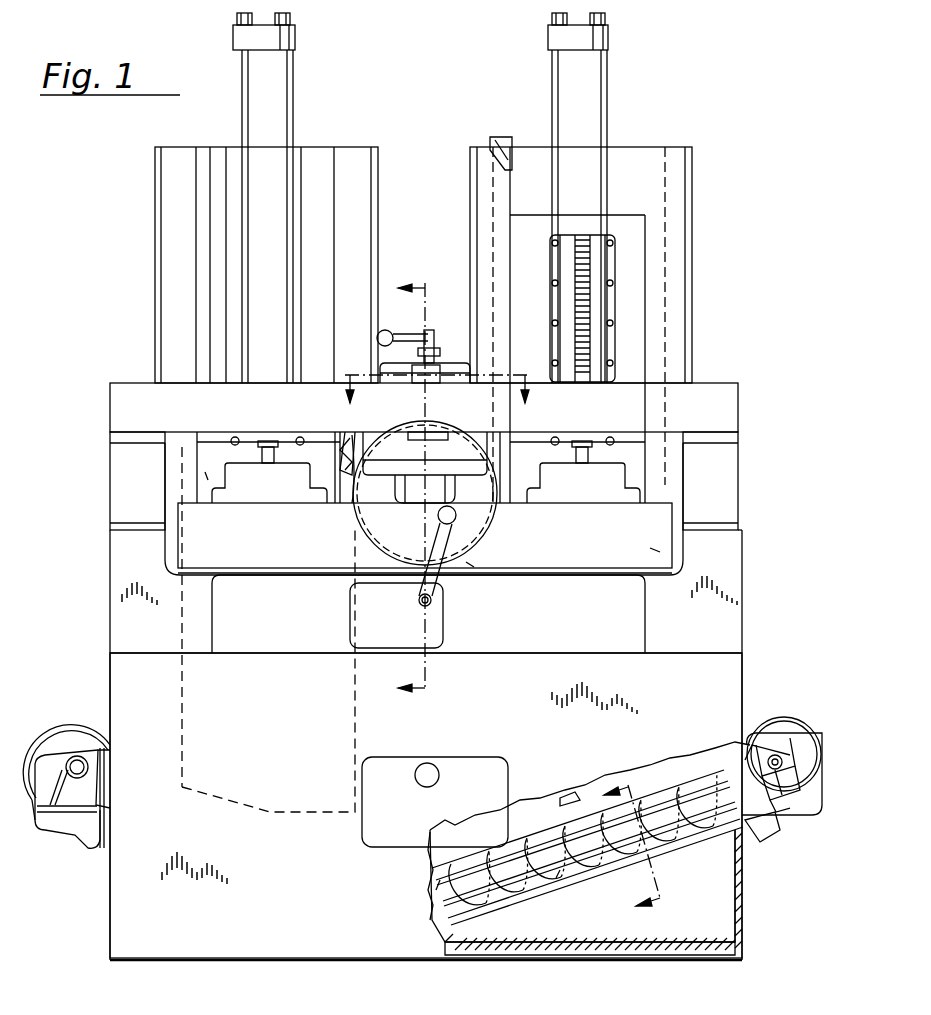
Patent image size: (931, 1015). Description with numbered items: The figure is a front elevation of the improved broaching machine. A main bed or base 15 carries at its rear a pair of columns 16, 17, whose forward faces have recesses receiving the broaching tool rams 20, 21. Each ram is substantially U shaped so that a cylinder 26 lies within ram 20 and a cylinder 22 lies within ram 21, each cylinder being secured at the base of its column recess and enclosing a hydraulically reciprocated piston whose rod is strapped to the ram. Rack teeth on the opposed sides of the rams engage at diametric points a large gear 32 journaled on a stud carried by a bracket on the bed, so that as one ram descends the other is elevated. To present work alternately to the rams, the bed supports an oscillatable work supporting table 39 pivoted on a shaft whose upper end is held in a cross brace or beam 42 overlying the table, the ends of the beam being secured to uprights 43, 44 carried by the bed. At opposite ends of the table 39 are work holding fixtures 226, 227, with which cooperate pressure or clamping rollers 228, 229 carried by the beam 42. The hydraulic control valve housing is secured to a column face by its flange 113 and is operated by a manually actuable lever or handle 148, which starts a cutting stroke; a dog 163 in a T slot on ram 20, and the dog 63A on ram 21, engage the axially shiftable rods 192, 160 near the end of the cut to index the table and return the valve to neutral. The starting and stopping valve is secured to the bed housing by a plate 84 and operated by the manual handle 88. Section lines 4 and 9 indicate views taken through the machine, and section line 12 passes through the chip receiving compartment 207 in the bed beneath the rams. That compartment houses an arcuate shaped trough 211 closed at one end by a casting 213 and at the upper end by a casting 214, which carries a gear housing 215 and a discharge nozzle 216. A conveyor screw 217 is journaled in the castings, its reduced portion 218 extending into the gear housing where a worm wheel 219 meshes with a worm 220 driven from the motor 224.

The cylinder 26 is at (275, 98).
The column 16 is at (356, 153).
The cylinder 22 is at (590, 80).
The column 17 is at (632, 147).
The dog 63A is at (500, 140).
The broaching tool ram 21 is at (635, 237).
The manually actuable lever or handle 148 is at (418, 330).
The flange 113 is at (463, 350).
The section line 4 is at (422, 492).
The section line 9 is at (442, 395).
The cross brace or beam 42 is at (722, 383).
The upright 44 is at (110, 478).
The upright 43 is at (727, 457).
The broaching tool ram 20 is at (208, 477).
The pressure or clamping roller 228 is at (268, 463).
The work holding fixture 226 is at (268, 490).
The axially shiftable rod 192 is at (350, 503).
The dog 163 is at (340, 428).
The rod 160 is at (500, 440).
The pressure or clamping roller 229 is at (582, 463).
The work holding fixture 227 is at (600, 485).
The work supporting table 39 is at (655, 552).
The manual operating lever or handle 88 is at (478, 548).
The large gear 32 is at (470, 565).
The plate 84 is at (443, 616).
The main bed or base 15 is at (110, 888).
The chip receiving compartment 207 is at (725, 732).
The screw conveyor 12 is at (587, 847).
The conveyor screw 217 is at (582, 780).
The arcuate shaped trough 211 is at (556, 880).
The casting 213 is at (452, 912).
The reduced portion 218 is at (815, 730).
The motor 224 is at (770, 740).
The casting 214 is at (768, 760).
The worm 220 is at (790, 745).
The gear housing 215 is at (790, 800).
The worm wheel 219 is at (788, 810).
The discharge nozzle 216 is at (770, 840).